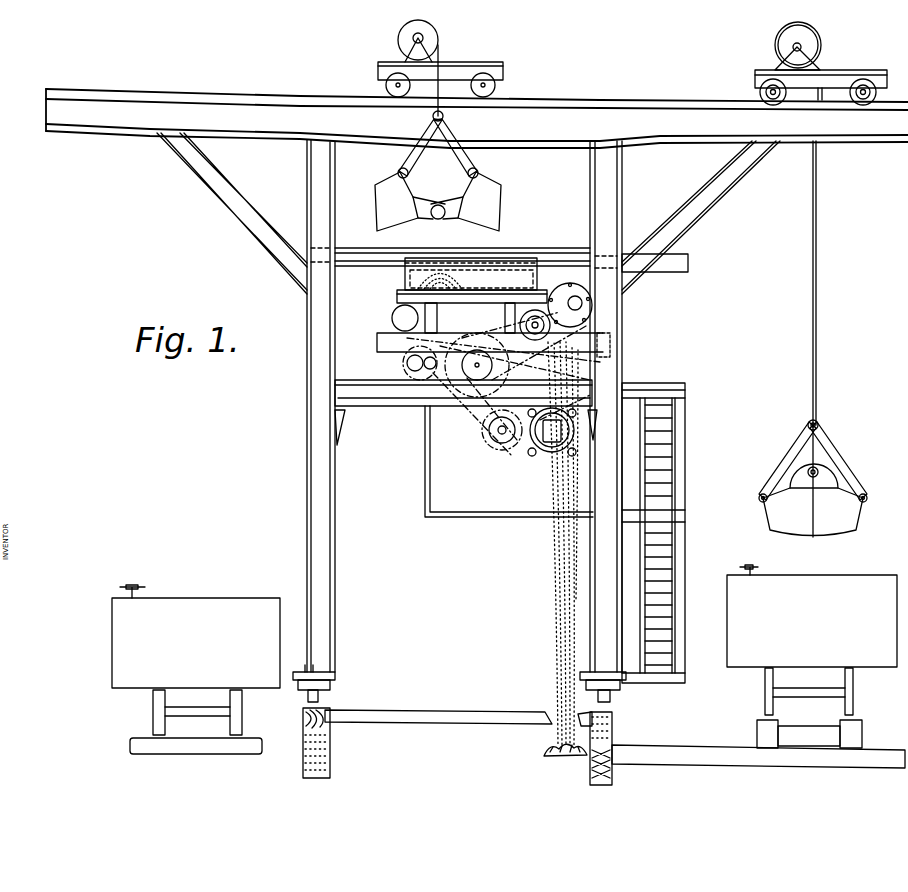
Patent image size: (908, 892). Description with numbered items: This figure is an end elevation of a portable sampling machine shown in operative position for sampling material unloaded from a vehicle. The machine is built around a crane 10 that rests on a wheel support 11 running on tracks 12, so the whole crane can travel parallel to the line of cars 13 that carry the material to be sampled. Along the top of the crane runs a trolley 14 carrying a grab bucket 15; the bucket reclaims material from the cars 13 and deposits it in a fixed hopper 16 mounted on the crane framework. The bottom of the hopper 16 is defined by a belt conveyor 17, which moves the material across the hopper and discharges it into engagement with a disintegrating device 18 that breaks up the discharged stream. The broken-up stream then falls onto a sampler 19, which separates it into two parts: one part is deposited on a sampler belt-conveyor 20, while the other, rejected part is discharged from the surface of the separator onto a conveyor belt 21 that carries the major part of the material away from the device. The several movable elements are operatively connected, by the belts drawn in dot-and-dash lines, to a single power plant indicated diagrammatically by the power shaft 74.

The crane 10 is at (327, 566).
The wheel support 11 is at (325, 693).
The tracks 12 is at (608, 712).
The cars 13 is at (812, 656).
The trolley 14 is at (398, 45).
The grab bucket 15 is at (373, 212).
The fixed hopper 16 is at (475, 270).
The belt conveyor 17 is at (499, 310).
The disintegrating device 18 is at (598, 307).
The sampler 19 is at (542, 452).
The sampler belt-conveyor 20 is at (556, 450).
The conveyor belt 21 is at (556, 754).
The power shaft 74 is at (502, 436).